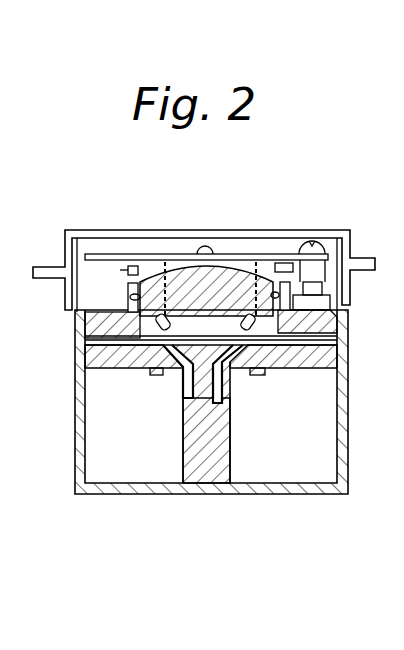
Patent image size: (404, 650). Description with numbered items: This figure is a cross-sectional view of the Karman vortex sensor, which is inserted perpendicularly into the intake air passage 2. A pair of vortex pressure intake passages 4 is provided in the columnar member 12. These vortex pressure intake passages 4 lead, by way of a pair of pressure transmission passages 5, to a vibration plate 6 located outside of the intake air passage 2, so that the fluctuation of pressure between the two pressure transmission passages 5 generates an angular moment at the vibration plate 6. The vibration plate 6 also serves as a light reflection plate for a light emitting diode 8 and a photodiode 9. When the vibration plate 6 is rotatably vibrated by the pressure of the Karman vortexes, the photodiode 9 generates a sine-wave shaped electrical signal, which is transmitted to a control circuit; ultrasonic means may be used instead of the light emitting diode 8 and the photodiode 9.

The intake air passage 2 is at (349, 446).
The vortex pressure intake passages 4 is at (235, 407).
The pressure transmission passages 5 is at (205, 392).
The vibration plate 6 is at (205, 323).
The light emitting diode 8 is at (250, 320).
The photodiode 9 is at (186, 318).
The columnar member 12 is at (232, 452).